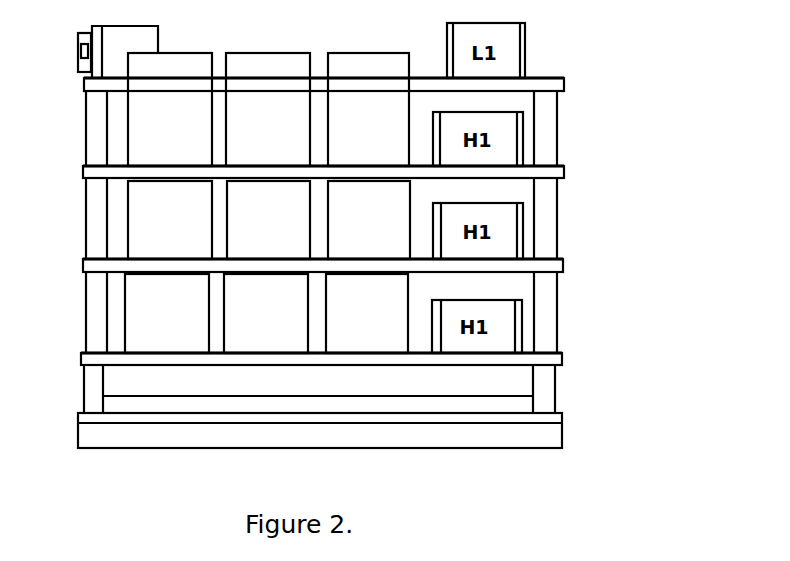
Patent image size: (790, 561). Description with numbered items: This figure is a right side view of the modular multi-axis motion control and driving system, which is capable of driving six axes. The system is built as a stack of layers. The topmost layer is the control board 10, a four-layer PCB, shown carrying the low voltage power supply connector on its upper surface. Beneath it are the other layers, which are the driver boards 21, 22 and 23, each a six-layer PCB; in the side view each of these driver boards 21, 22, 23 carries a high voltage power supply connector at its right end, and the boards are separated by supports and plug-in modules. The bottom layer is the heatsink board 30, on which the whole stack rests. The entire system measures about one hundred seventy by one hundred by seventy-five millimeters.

The control board 10 is at (503, 87).
The driver board 21 is at (502, 170).
The driver board 22 is at (510, 268).
The driver board 23 is at (510, 353).
The heatsink board 30 is at (500, 445).